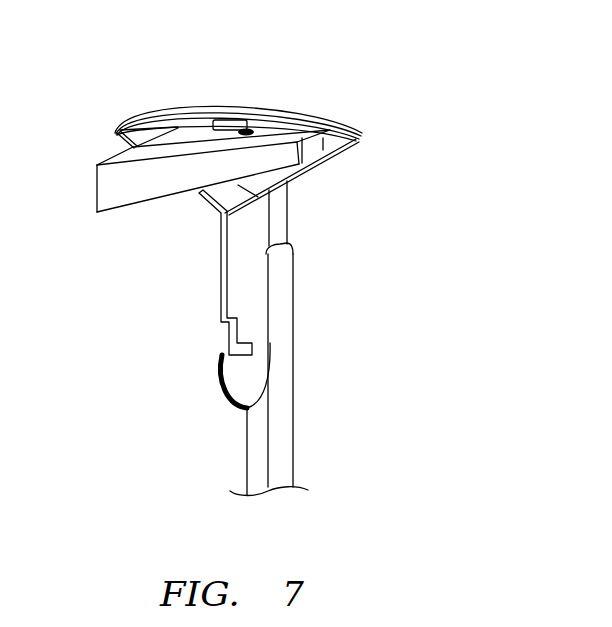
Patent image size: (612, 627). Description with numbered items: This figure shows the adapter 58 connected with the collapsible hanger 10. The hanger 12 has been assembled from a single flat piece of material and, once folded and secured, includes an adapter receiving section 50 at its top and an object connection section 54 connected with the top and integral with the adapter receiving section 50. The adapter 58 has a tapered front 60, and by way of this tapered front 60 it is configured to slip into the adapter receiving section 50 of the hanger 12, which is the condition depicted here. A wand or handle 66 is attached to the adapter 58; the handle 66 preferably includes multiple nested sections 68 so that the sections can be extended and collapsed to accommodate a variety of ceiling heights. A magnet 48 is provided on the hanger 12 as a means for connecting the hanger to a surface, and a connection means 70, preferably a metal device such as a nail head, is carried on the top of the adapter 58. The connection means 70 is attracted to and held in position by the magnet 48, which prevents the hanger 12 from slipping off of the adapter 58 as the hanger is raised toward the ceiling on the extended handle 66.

The collapsible hanger 10 is at (462, 105).
The hanger 12 is at (335, 130).
The magnet 48 is at (246, 127).
The adapter receiving section 50 is at (151, 106).
The object connection section 54 is at (211, 315).
The adapter 58 is at (108, 183).
The tapered front 60 is at (119, 215).
The wand or handle 66 is at (246, 436).
The nested sections 68 is at (288, 216).
The connection means 70 is at (117, 132).